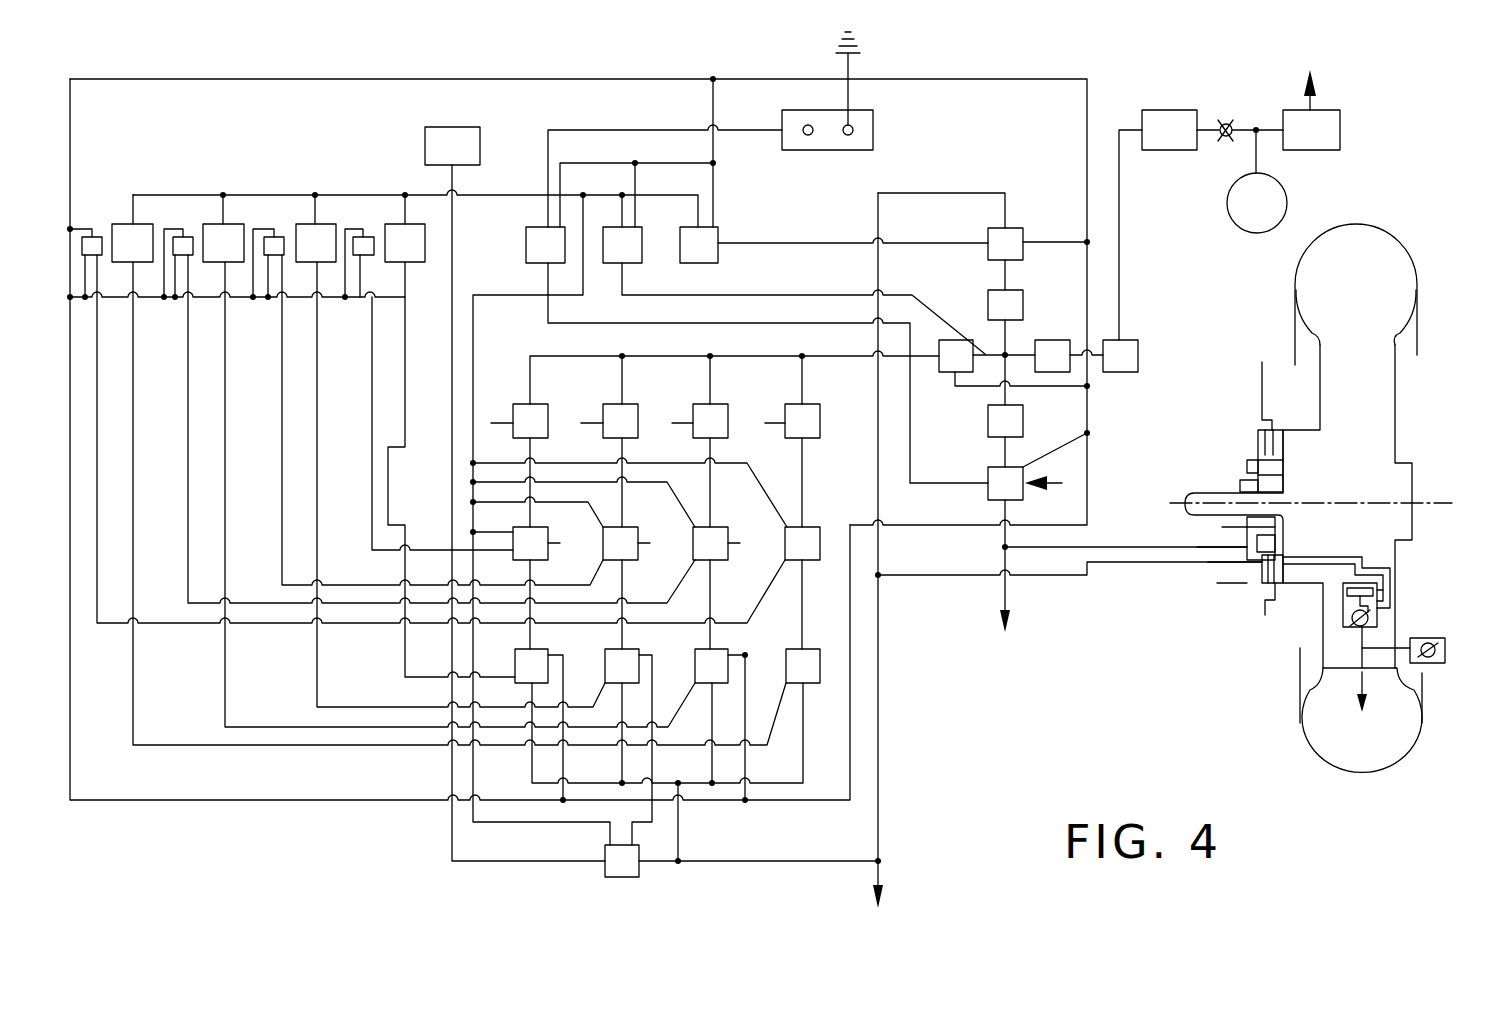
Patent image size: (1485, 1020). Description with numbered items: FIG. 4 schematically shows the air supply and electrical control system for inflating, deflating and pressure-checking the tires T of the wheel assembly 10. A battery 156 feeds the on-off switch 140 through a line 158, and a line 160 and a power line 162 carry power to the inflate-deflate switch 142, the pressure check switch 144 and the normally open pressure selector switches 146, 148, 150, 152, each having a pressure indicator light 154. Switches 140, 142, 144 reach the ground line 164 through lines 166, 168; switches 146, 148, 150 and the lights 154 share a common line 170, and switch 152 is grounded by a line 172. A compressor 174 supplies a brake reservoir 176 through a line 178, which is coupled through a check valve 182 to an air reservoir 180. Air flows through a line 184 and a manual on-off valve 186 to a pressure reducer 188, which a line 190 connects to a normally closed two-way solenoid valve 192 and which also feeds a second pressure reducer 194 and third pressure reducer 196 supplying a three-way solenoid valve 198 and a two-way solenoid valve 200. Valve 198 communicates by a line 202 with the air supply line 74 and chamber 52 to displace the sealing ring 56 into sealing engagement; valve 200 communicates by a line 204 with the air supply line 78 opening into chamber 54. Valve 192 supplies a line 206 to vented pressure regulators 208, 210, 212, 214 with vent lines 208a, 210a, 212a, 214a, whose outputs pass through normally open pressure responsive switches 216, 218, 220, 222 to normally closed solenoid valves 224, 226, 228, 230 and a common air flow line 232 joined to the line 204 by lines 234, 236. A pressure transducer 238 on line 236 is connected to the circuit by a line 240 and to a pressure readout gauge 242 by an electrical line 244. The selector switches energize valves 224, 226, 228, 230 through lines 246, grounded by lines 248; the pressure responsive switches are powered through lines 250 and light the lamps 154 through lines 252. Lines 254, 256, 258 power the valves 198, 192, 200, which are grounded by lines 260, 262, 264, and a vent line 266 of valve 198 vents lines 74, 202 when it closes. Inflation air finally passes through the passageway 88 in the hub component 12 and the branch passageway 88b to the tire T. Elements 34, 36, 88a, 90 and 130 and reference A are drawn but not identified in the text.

The wheel assembly 10 is at (1415, 442).
The hub component 12 is at (1290, 398).
The valve 34 is at (1432, 630).
The reservoir 36 is at (1360, 665).
The chamber 52 is at (1245, 545).
The chamber 54 is at (1262, 570).
The sealing ring 56 is at (1270, 545).
The air supply line 74 is at (1113, 552).
The air supply line 78 is at (1135, 568).
The passageway 88 is at (1330, 558).
The valve body 88a is at (1350, 583).
The branch passageway 88b is at (1388, 590).
The ball valve 90 is at (1330, 625).
The passage 130 is at (1360, 648).
The on-off switch 140 is at (537, 240).
The inflate-deflate switch 142 is at (627, 250).
The pressure check switch 144 is at (705, 230).
The pressure selector switch 146 is at (412, 235).
The pressure selector switch 148 is at (323, 232).
The pressure selector switch 150 is at (230, 232).
The pressure selector switch 152 is at (130, 230).
The pressure indicator light 154 is at (92, 237).
The battery 156 is at (858, 125).
The line 158 is at (570, 128).
The line 160 is at (522, 298).
The power line 162 is at (500, 190).
The ground line 164 is at (572, 79).
The line 166 is at (660, 160).
The line 168 is at (715, 185).
The common line 170 is at (240, 298).
The line 172 is at (72, 225).
The compressor 174 is at (1288, 205).
The brake reservoir 176 is at (1322, 115).
The line 178 is at (1262, 158).
The air reservoir 180 is at (1162, 110).
The check valve 182 is at (1232, 115).
The line 184 is at (1122, 313).
The manually operable on-off valve 186 is at (1140, 350).
The pressure reducer 188 is at (1045, 350).
The line 190 is at (975, 340).
The two-way solenoid valve 192 is at (948, 375).
The second pressure reducer 194 is at (995, 425).
The third pressure reducer 196 is at (1010, 300).
The three-way solenoid valve 198 is at (1015, 492).
The two-way solenoid valve 200 is at (1010, 230).
The line 202 is at (1003, 538).
The line 204 is at (912, 488).
The line 206 is at (740, 356).
The pressure regulator 208 is at (812, 430).
The vent line 208a is at (775, 423).
The pressure regulator 210 is at (715, 430).
The vent line 210a is at (683, 423).
The pressure regulator 212 is at (625, 430).
The vent line 212a is at (592, 423).
The pressure regulator 214 is at (535, 430).
The vent line 214a is at (500, 423).
The pressure responsive switch 216 is at (808, 535).
The pressure responsive switch 218 is at (720, 548).
The pressure responsive switch 220 is at (630, 548).
The pressure responsive switch 222 is at (540, 548).
The two-way solenoid valve 224 is at (820, 655).
The two-way solenoid valve 226 is at (715, 660).
The two-way solenoid valve 228 is at (625, 660).
The two-way solenoid valve 230 is at (535, 660).
The common air flow line 232 is at (725, 802).
The line 234 is at (682, 850).
The line 236 is at (740, 865).
The pressure transducer 238 is at (625, 868).
The line 240 is at (473, 770).
The pressure readout gauge 242 is at (462, 140).
The electrical line 244 is at (452, 828).
The lines 246 is at (225, 665).
The line 248 is at (565, 762).
The line 250 is at (495, 530).
The line 252 is at (390, 603).
The line 254 is at (740, 323).
The line 256 is at (740, 295).
The line 258 is at (898, 242).
The line 260 is at (1060, 388).
The line 262 is at (1068, 442).
The line 264 is at (1040, 232).
The vent line 266 is at (1062, 483).
The tire T is at (1410, 255).
The axis A is at (1428, 502).